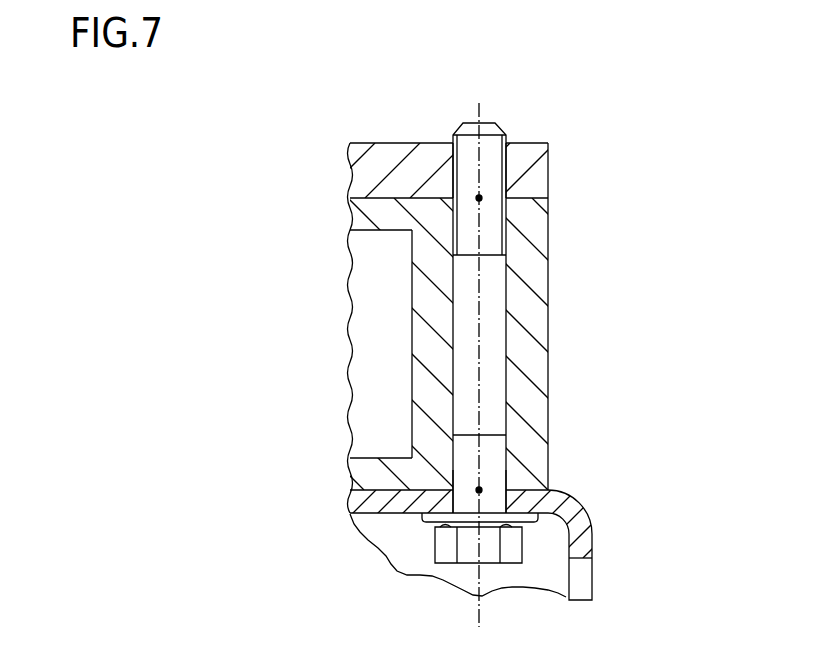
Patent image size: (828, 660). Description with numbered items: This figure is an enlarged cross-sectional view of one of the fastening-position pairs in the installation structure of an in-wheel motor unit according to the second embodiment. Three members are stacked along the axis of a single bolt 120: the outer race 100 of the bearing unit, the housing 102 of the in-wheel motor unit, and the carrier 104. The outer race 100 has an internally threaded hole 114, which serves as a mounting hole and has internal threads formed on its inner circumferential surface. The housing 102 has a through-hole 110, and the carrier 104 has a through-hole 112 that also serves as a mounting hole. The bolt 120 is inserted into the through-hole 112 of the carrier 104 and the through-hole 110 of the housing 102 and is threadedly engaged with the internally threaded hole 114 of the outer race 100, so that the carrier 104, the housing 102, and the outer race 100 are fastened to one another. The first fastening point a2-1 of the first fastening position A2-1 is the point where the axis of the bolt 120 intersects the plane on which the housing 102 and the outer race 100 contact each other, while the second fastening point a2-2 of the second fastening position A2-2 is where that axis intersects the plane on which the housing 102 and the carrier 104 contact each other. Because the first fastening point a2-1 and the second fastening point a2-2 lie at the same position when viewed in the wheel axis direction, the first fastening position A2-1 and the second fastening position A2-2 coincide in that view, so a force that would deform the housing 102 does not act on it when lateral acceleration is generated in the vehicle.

The outer race 100 is at (380, 162).
The housing 102 is at (536, 266).
The carrier 104 is at (376, 522).
The through-hole 110 is at (507, 339).
The through-hole 112 is at (503, 478).
The internally threaded hole 114 is at (509, 185).
The bolt 120 is at (448, 552).
The first fastening point a2-1 is at (473, 185).
The second fastening point a2-2 is at (486, 508).
The first fastening position A2-1 is at (538, 124).
The second fastening position A2-2 is at (541, 545).